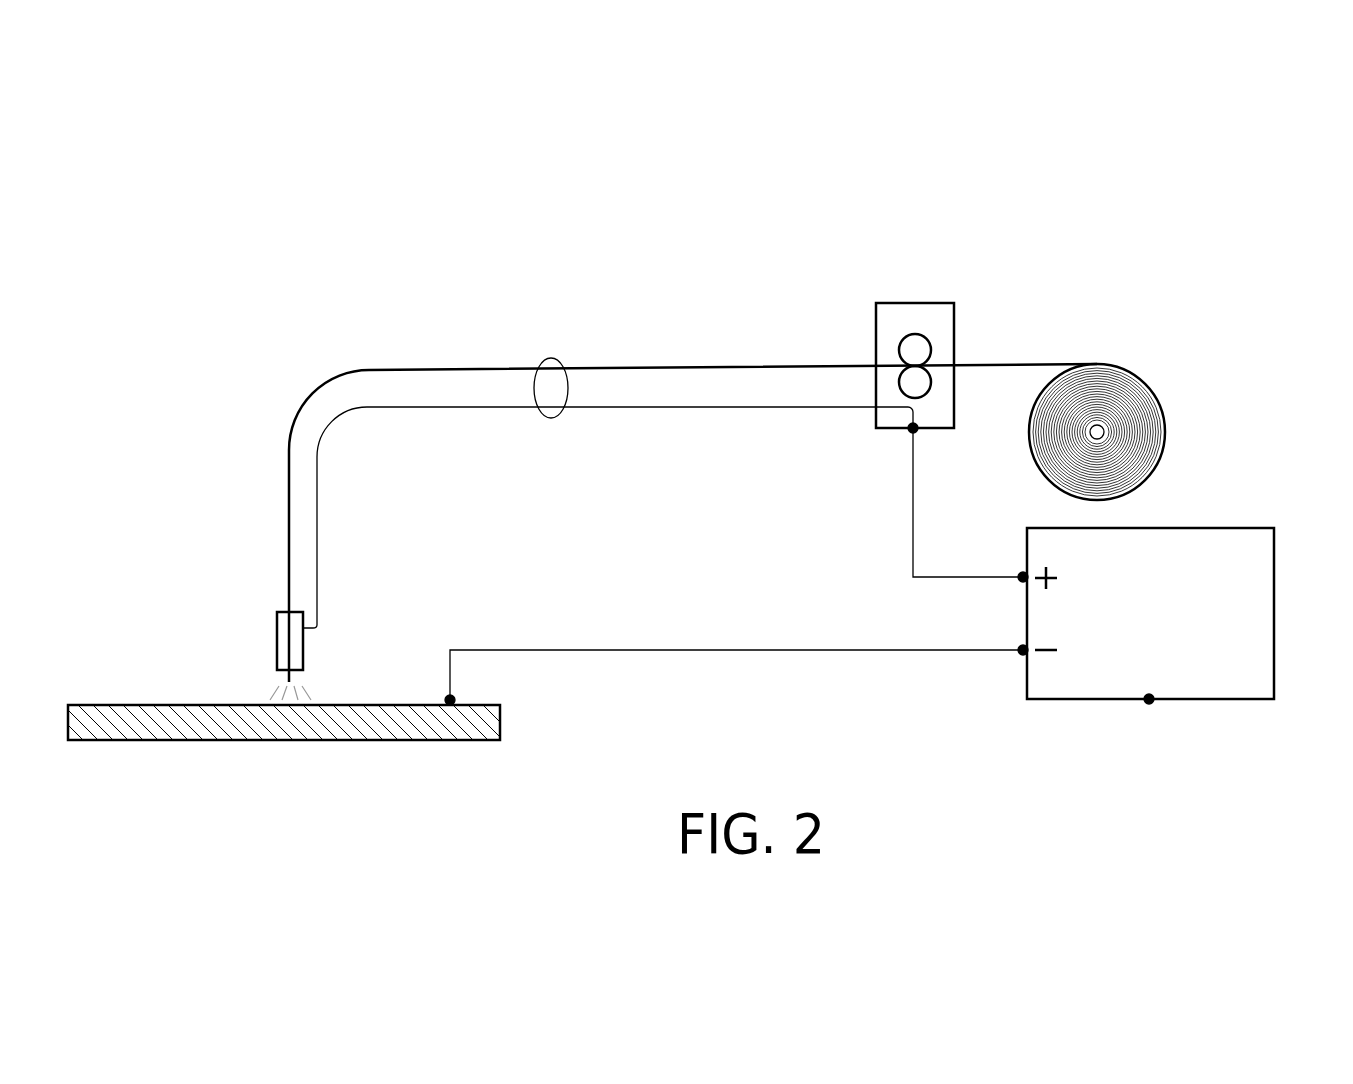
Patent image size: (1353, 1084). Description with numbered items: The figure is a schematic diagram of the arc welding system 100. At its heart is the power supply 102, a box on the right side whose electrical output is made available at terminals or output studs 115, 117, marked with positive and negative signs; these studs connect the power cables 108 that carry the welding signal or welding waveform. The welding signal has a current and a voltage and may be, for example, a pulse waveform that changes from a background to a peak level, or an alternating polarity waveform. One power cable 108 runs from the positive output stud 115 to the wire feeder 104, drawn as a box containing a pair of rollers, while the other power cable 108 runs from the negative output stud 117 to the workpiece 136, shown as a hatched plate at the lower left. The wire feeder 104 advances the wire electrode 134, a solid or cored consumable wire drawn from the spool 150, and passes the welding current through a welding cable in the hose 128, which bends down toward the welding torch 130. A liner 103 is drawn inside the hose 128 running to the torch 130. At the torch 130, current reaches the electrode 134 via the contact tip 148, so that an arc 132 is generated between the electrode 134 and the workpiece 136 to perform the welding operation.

The arc welding system 100 is at (778, 232).
The power supply 102 is at (1235, 528).
The conduit liner 103 is at (433, 408).
The wire feeder 104 is at (915, 303).
The power cables 108 is at (913, 505).
The output stud 115 is at (1022, 577).
The output stud 117 is at (1022, 653).
The hose 128 is at (548, 358).
The welding torch 130 is at (248, 630).
The arc 132 is at (248, 688).
The wire electrode 134 is at (288, 513).
The workpiece 136 is at (385, 742).
The contact tip 148 is at (304, 645).
The spool 150 is at (1200, 408).